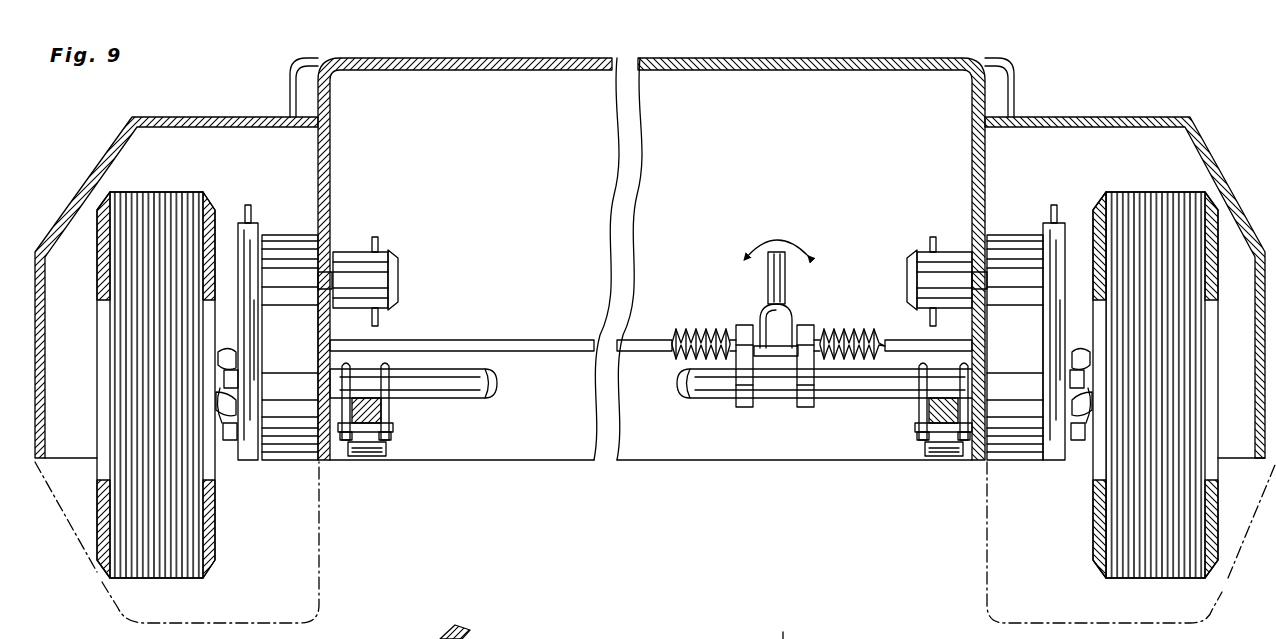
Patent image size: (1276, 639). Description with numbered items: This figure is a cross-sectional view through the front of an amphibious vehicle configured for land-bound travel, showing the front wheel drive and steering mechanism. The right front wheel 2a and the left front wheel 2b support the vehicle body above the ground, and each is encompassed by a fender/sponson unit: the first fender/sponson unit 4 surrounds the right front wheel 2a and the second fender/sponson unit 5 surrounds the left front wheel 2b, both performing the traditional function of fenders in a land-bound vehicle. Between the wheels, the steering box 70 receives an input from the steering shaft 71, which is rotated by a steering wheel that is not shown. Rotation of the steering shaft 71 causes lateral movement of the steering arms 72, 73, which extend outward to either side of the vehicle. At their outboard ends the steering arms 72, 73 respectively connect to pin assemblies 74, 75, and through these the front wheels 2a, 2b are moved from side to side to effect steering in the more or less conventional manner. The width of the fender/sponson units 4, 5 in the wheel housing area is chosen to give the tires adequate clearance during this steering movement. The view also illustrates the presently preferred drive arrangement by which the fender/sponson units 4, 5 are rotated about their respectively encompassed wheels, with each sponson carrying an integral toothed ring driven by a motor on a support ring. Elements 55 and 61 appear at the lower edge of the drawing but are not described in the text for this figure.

The right front wheel 2a is at (102, 566).
The left front wheel 2b is at (1216, 564).
The first fender/sponson unit 4 is at (73, 190).
The second fender/sponson unit 5 is at (1238, 185).
The frame member 55 is at (787, 628).
The pivot member 61 is at (495, 638).
The steering box 70 is at (792, 318).
The steering shaft 71 is at (768, 288).
The steering arm 72 is at (538, 344).
The steering arm 73 is at (896, 342).
The pin assembly 74 is at (229, 456).
The pin assembly 75 is at (1081, 456).